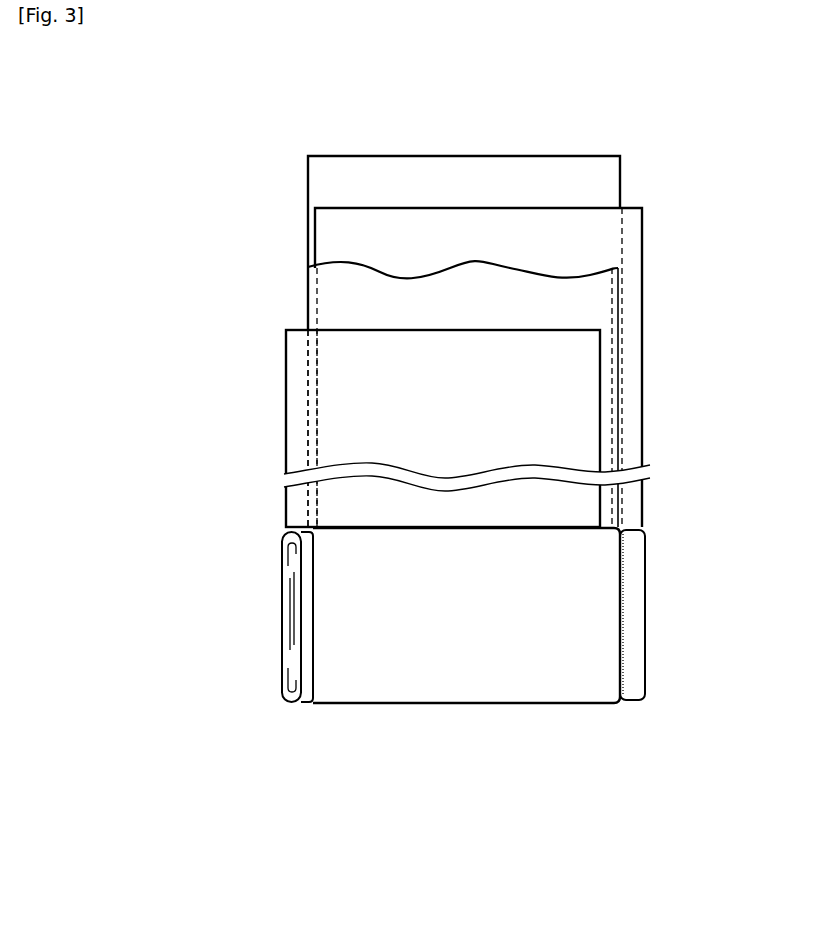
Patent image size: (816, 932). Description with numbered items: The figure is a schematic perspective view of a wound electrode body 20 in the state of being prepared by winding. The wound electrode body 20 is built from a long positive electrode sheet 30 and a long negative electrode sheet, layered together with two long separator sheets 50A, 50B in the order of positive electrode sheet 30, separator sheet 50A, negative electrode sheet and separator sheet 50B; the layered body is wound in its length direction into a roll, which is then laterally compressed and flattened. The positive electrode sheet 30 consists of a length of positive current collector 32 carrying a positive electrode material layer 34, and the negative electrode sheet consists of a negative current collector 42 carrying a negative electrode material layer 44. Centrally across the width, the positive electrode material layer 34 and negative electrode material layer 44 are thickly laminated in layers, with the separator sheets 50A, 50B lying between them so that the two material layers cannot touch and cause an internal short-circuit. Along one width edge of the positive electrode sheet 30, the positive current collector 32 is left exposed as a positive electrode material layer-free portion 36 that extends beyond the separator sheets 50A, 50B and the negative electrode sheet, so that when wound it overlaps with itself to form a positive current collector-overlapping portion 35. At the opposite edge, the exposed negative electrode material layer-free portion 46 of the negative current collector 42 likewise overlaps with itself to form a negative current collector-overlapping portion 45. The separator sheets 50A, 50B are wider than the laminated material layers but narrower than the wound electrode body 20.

The wound electrode body 20 is at (380, 685).
The positive electrode sheet 30 is at (378, 428).
The positive current collector 32 is at (287, 351).
The positive electrode material layer 34 is at (341, 443).
The positive current collector-overlapping portion 35 is at (290, 588).
The positive electrode material layer-free portion 36 is at (298, 411).
The negative current collector 42 is at (643, 268).
The negative electrode material layer 44 is at (607, 230).
The negative current collector-overlapping portion 45 is at (635, 593).
The negative electrode material layer-free portion 46 is at (625, 335).
The separator sheet 50A is at (335, 295).
The separator sheet 50B is at (330, 172).